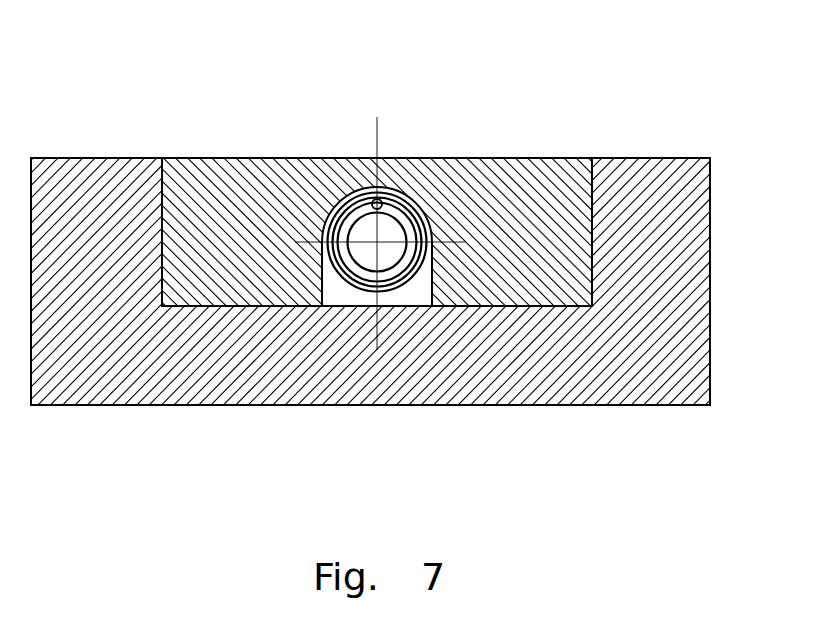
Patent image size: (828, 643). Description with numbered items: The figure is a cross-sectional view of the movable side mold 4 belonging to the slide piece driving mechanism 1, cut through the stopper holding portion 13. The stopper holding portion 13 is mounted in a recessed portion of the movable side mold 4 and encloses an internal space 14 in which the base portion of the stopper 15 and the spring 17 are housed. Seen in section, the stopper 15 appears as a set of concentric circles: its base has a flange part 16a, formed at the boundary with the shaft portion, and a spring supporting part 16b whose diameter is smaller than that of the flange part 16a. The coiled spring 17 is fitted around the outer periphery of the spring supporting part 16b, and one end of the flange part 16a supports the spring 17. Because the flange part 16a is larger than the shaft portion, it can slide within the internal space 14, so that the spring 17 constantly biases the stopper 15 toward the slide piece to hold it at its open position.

The slide piece driving mechanism 1 is at (366, 190).
The movable side mold 4 is at (623, 157).
The stopper holding portion 13 is at (223, 177).
The internal space 14 is at (403, 293).
The stopper 15 is at (366, 255).
The flange part 16a is at (427, 225).
The spring supporting part 16b is at (385, 227).
The spring 17 is at (412, 263).